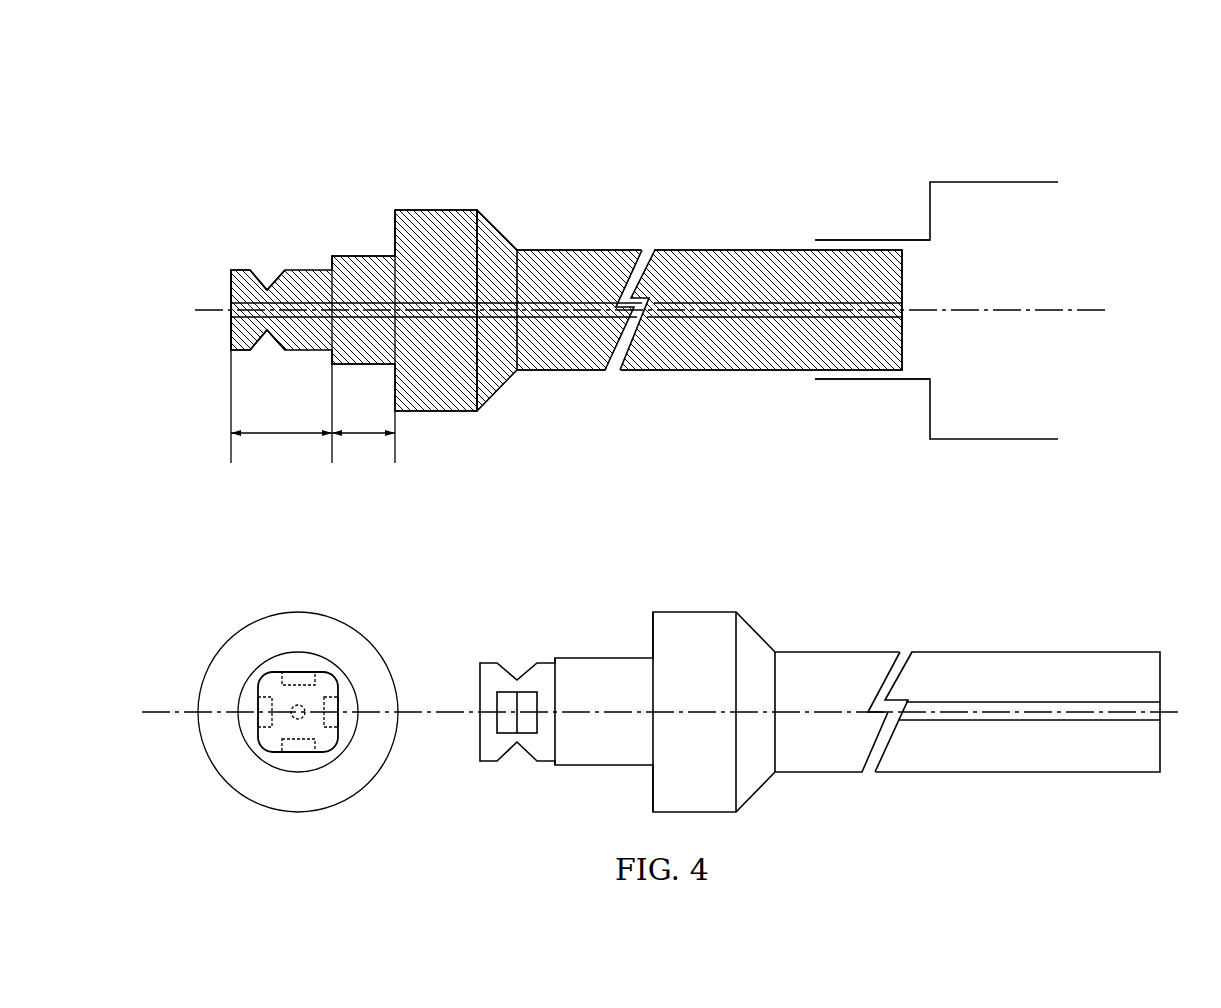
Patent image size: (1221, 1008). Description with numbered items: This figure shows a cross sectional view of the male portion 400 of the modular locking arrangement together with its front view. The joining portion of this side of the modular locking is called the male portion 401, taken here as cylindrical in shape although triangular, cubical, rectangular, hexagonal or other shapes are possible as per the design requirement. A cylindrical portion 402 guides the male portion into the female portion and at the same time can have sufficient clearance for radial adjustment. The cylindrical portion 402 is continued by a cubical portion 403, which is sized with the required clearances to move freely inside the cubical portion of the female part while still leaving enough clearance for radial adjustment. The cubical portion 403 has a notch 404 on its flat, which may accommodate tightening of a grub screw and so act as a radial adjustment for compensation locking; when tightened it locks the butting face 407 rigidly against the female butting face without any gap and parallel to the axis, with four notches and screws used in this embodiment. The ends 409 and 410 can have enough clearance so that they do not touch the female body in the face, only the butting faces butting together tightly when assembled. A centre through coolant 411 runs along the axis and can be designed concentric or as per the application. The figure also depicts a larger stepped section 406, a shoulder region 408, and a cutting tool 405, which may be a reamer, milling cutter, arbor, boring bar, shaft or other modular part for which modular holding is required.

The male portion 400 is at (635, 433).
The male portion joining portion 401 is at (709, 289).
The cylindrical portion 402 is at (322, 495).
The cubical portion 403 is at (333, 480).
The notch 404 is at (207, 292).
The cutting tool 405 is at (993, 310).
The collar 406 is at (466, 287).
The butting face 407 is at (346, 207).
The step 408 is at (893, 266).
The end clearance region 409 is at (363, 426).
The end clearance region 410 is at (281, 426).
The centre through coolant 411 is at (566, 373).